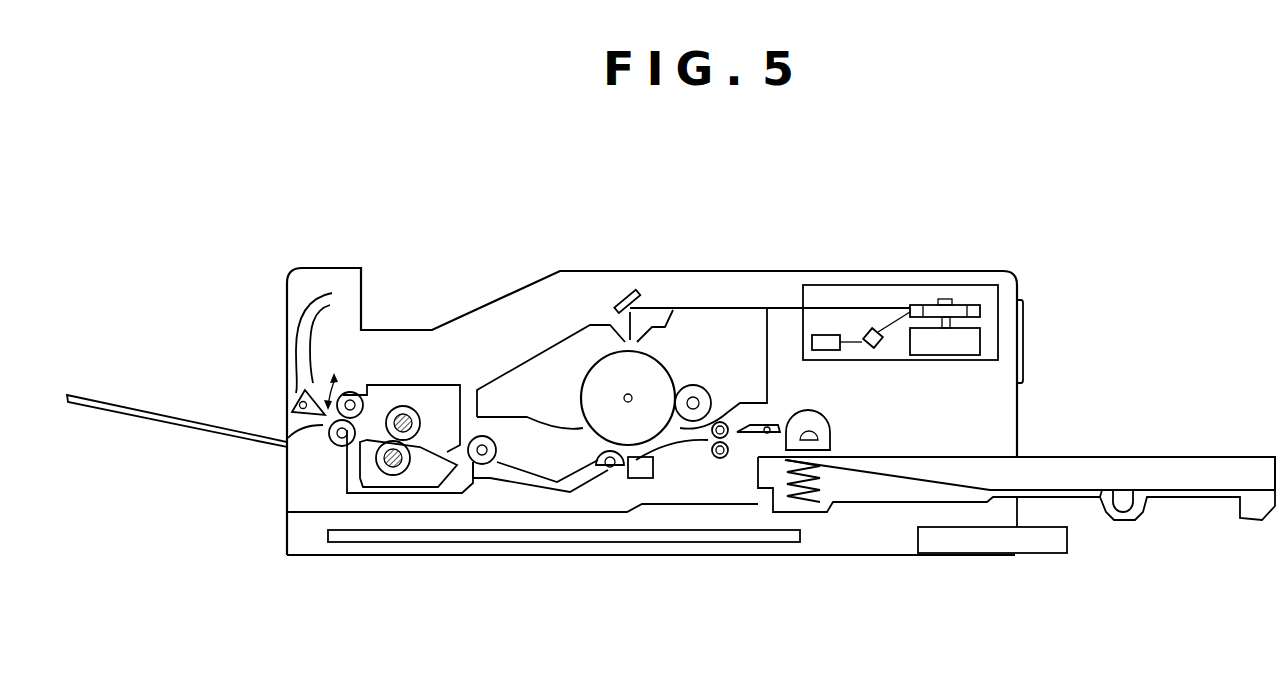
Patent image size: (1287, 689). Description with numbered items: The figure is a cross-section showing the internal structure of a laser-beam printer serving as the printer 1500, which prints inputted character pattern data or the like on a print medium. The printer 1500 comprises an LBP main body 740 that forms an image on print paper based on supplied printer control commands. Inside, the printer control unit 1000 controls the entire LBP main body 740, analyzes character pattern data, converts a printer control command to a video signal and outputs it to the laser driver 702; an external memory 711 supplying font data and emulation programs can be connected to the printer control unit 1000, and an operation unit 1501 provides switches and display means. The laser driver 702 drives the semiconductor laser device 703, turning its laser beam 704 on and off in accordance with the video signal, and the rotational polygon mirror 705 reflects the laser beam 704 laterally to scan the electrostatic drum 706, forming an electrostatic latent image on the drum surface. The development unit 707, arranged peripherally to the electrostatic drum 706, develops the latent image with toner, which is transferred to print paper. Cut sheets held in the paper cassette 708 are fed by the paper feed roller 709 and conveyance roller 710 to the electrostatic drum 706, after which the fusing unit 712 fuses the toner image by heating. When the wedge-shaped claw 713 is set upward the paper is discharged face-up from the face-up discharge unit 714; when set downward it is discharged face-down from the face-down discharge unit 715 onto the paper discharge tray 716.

The printer 1500 is at (714, 222).
The operation unit 1501 is at (1026, 334).
The face-down discharge unit 715 is at (361, 297).
The paper discharge tray 716 is at (130, 407).
The wedge-shaped claw 713 is at (293, 402).
The face-up discharge unit 714 is at (285, 432).
The fusing unit 712 is at (410, 388).
The development unit 707 is at (520, 395).
The electrostatic drum 706 is at (593, 387).
The LBP main body 740 is at (921, 275).
The laser beam 704 is at (840, 308).
The laser driver 702 is at (825, 352).
The semiconductor laser device 703 is at (875, 350).
The rotational polygon mirror 705 is at (978, 307).
The paper feed roller 709 is at (830, 427).
The conveyance roller 710 is at (717, 455).
The paper cassette 708 is at (1138, 457).
The external memory 711 is at (1045, 548).
The printer control unit 1000 is at (345, 540).